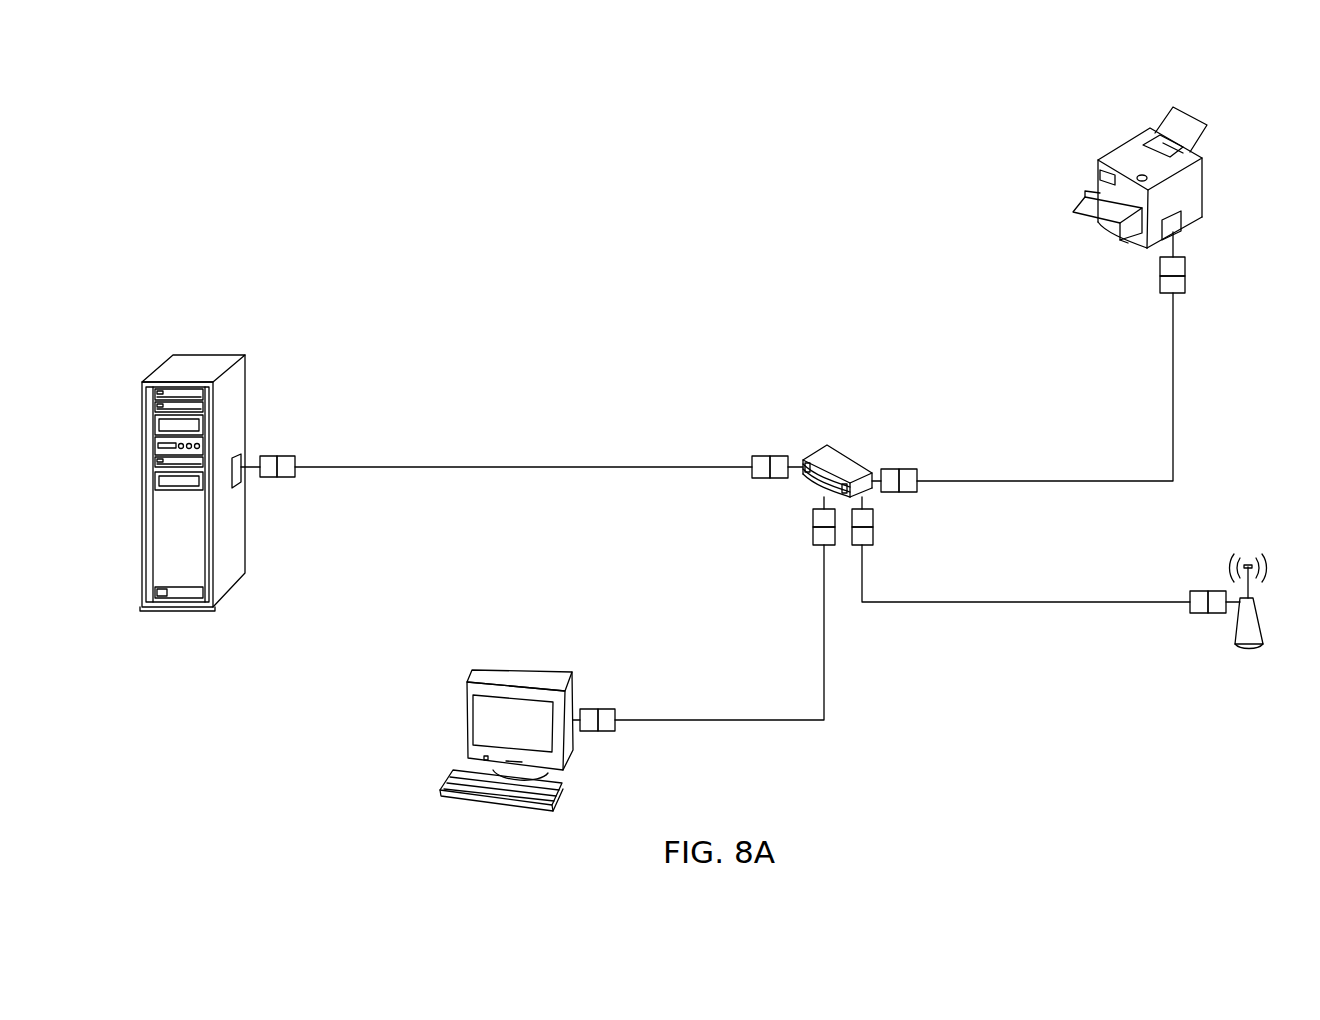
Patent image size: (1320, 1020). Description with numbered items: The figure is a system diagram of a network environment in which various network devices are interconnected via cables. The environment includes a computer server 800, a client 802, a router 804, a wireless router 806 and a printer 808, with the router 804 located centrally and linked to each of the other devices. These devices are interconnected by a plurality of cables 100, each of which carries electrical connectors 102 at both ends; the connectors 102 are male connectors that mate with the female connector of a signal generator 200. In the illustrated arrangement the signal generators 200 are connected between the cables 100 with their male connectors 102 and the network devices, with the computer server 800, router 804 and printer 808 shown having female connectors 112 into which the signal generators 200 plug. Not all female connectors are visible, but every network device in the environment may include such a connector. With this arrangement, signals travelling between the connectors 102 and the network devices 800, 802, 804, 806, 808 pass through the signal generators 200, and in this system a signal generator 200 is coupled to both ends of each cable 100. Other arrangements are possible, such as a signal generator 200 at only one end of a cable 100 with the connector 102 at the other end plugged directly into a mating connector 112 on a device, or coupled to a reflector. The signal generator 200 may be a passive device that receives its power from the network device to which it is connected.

The cable 100 is at (549, 467).
The electrical connector 102 is at (283, 477).
The female connector 112 is at (243, 453).
The signal generator 200 is at (270, 456).
The computer server 800 is at (176, 616).
The client 802 is at (517, 661).
The router 804 is at (827, 443).
The wireless router 806 is at (1252, 657).
The printer 808 is at (1115, 141).